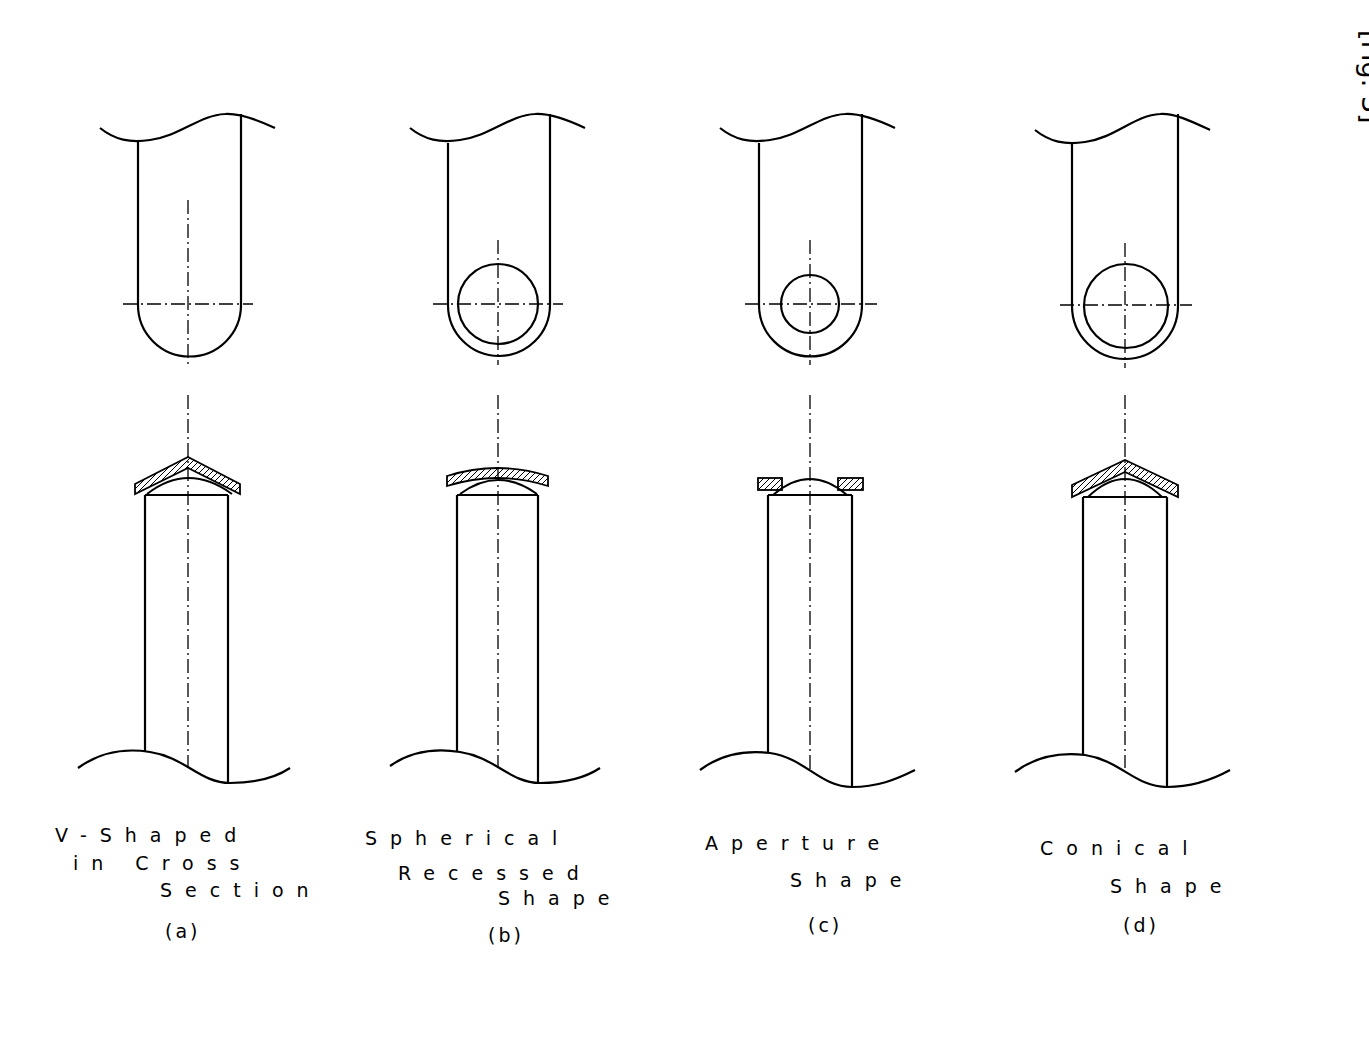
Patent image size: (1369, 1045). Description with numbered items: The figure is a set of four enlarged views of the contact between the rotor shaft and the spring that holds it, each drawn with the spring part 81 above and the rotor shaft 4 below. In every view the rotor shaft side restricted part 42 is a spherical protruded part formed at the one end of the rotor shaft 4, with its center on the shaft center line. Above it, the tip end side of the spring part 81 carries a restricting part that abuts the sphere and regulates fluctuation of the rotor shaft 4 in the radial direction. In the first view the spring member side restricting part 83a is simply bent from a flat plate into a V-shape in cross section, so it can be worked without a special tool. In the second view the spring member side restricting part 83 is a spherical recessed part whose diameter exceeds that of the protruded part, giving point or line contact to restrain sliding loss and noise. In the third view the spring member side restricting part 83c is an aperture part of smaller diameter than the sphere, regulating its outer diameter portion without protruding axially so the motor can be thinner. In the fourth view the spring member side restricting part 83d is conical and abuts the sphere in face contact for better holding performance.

The rotor shaft 4 is at (530, 565).
The rotor shaft side restricted part 42 is at (228, 504).
The spring part 81 is at (519, 210).
The spring member side restricting part 83 is at (515, 468).
The spring member side restricting part 83a is at (200, 462).
The spring member side restricting part 83c is at (828, 478).
The spring member side restricting part 83d is at (1142, 325).